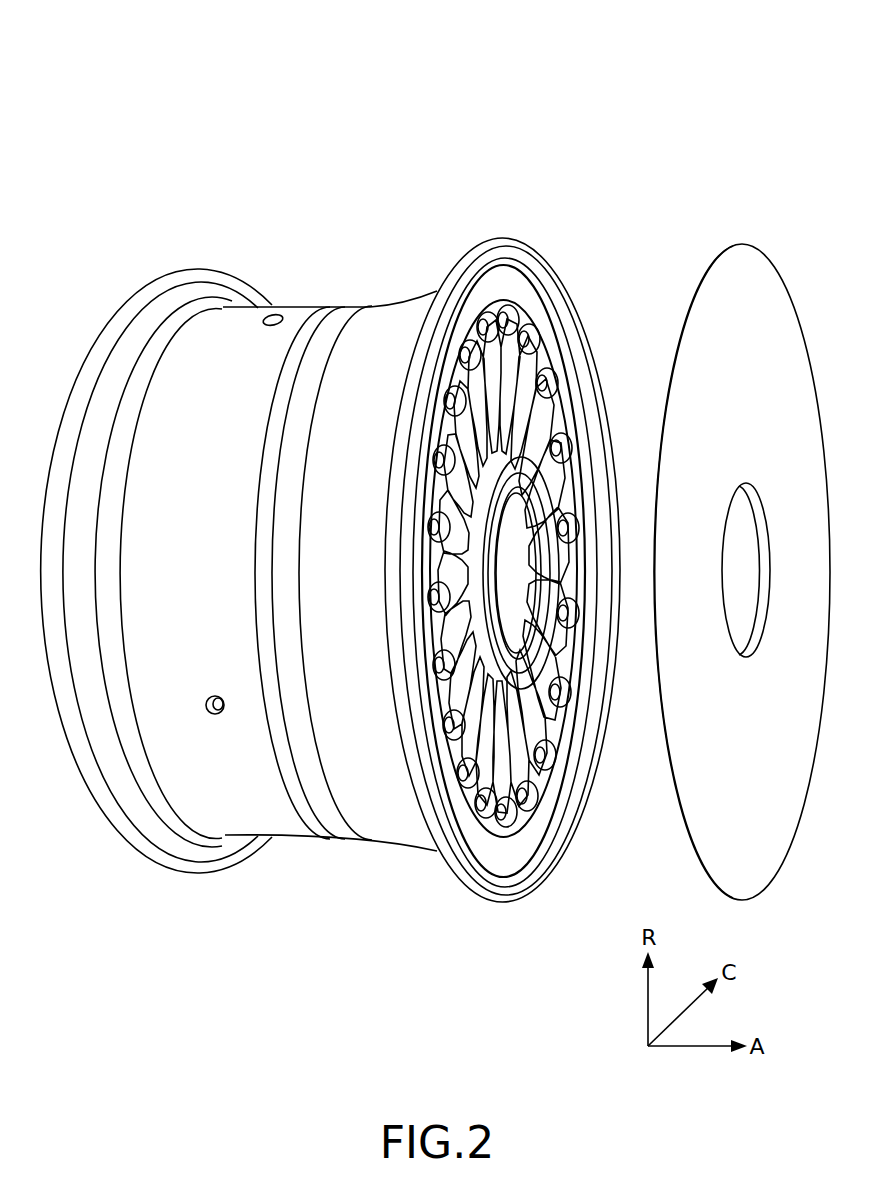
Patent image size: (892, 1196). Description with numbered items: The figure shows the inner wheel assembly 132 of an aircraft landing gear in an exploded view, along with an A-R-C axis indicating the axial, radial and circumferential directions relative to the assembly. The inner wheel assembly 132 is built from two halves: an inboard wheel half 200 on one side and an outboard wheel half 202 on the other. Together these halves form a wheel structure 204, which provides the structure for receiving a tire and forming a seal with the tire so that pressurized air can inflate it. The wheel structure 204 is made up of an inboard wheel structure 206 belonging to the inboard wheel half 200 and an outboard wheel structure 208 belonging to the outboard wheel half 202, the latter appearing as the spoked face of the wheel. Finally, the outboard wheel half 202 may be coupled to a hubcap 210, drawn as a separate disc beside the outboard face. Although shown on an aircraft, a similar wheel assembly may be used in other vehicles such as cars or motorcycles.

The inner wheel assembly 132 is at (121, 136).
The inboard wheel half 200 is at (160, 279).
The outboard wheel half 202 is at (495, 241).
The wheel structure 204 is at (298, 307).
The inboard wheel structure 206 is at (168, 850).
The outboard wheel structure 208 is at (478, 894).
The hubcap 210 is at (722, 247).